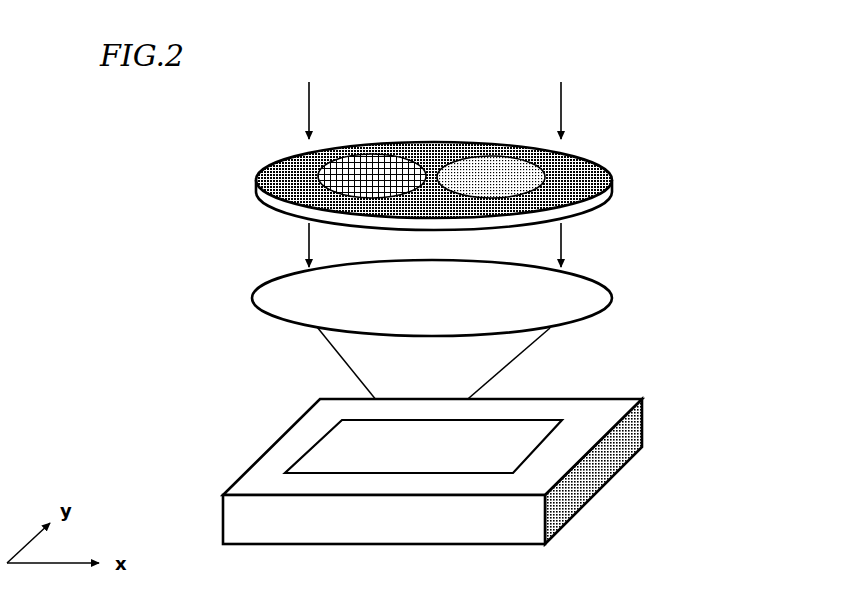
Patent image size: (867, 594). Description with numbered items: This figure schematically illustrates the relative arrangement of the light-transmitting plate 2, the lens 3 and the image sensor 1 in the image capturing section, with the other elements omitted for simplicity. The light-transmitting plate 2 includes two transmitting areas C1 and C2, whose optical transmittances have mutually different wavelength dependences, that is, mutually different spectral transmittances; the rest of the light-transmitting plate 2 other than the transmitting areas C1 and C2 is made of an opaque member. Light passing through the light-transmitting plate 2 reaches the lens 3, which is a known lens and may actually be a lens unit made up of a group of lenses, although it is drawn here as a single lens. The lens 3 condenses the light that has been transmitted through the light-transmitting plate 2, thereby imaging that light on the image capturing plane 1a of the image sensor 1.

The image sensor 1 is at (642, 413).
The image capturing plane 1a is at (330, 450).
The light-transmitting plate 2 is at (580, 160).
The lens 3 is at (588, 290).
The transmitting area C1 is at (365, 143).
The transmitting area C2 is at (498, 143).